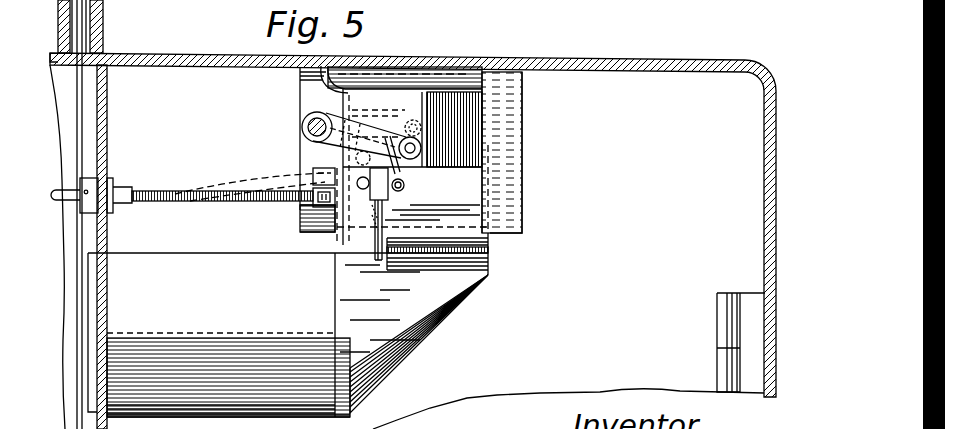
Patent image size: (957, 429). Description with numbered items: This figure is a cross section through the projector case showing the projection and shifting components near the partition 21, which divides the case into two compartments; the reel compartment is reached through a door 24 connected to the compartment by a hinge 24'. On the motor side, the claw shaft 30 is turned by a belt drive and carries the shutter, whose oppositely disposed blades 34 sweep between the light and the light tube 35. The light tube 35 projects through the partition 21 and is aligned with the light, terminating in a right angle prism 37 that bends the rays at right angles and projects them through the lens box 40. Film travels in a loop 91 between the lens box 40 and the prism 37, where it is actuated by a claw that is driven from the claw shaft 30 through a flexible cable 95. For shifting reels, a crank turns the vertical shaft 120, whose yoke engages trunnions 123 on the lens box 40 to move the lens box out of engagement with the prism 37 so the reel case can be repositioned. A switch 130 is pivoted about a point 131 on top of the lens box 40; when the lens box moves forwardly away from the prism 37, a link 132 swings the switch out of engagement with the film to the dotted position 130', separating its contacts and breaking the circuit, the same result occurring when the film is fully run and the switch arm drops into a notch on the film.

The partition 21 is at (108, 232).
The door 24 is at (433, 225).
The hinge 24' is at (716, 342).
The claw shaft 30 is at (57, 192).
The shutter blades 34 is at (76, 241).
The light tube 35 is at (186, 272).
The right angle prism 37 is at (424, 297).
The lens box 40 is at (484, 108).
The loop 91 is at (420, 250).
The flexible cable 95 is at (213, 180).
The vertical shaft 120 is at (302, 123).
The trunnions 123 is at (411, 119).
The switch 130 is at (330, 242).
The dotted position of switch 130' is at (328, 229).
The pivot point 131 is at (390, 141).
The link 132 is at (398, 160).